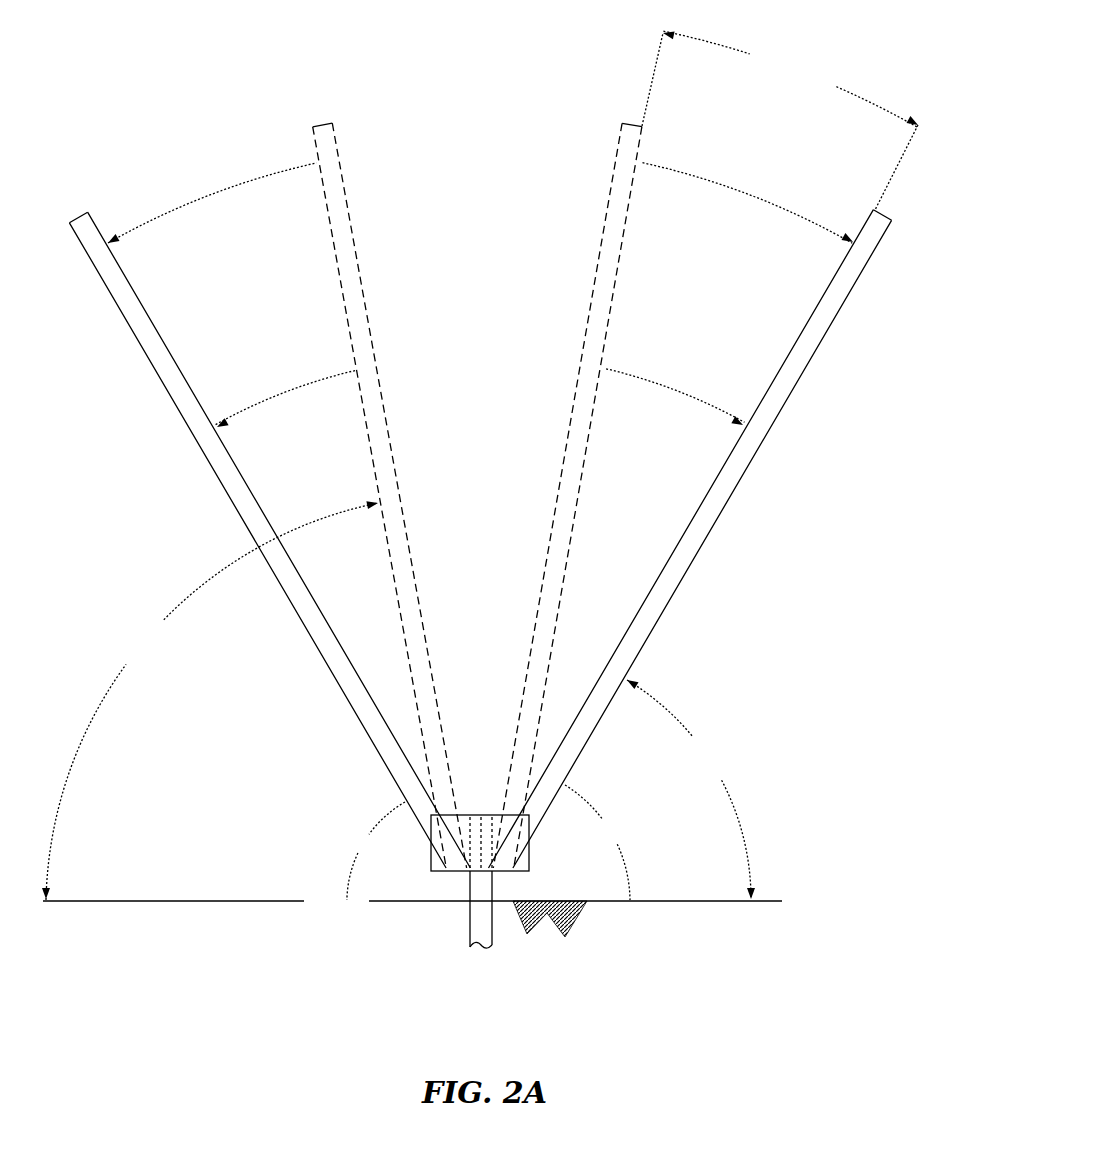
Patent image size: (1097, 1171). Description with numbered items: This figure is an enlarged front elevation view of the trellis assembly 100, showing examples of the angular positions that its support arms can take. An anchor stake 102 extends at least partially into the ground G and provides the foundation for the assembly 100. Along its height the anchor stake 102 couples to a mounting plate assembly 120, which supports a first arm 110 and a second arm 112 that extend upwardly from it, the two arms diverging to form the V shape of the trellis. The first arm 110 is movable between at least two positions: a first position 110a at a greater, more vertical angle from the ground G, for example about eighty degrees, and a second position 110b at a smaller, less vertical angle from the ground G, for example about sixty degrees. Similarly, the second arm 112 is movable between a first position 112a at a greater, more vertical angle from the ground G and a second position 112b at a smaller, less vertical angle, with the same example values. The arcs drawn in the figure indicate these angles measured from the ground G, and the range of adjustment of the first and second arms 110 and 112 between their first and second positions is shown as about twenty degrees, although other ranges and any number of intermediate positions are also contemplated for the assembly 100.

The trellis assembly 100 is at (501, 506).
The anchor stake 102 is at (477, 923).
The first arm 110 is at (269, 503).
The first position of the first arm 110a is at (323, 125).
The second position of the first arm 110b is at (73, 217).
The second arm 112 is at (725, 515).
The first position of the second arm 112a is at (638, 123).
The second position of the second arm 112b is at (880, 210).
The mounting plate assembly 120 is at (533, 854).
The ground G is at (573, 928).